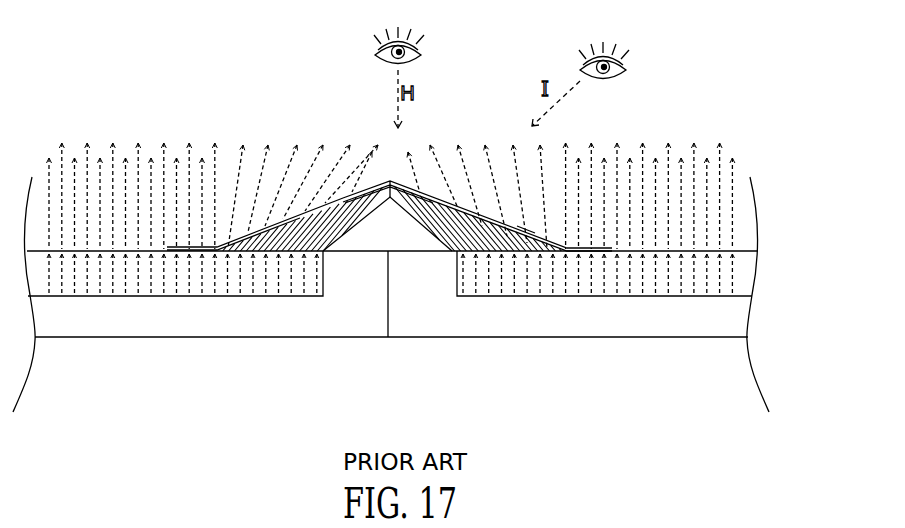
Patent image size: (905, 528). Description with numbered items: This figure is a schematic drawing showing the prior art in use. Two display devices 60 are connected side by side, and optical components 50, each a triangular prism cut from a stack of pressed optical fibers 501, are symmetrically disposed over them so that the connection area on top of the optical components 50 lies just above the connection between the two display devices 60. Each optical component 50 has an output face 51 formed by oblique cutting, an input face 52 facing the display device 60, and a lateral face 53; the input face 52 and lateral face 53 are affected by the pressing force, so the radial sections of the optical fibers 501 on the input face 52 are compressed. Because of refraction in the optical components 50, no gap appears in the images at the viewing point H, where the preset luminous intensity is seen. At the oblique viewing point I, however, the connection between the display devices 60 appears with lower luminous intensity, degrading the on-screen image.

The optical component 50 is at (274, 203).
The output face 51 is at (296, 214).
The input face 52 is at (297, 251).
The lateral face 53 is at (363, 220).
The display device 60 is at (407, 315).
The optical fiber 501 is at (471, 240).